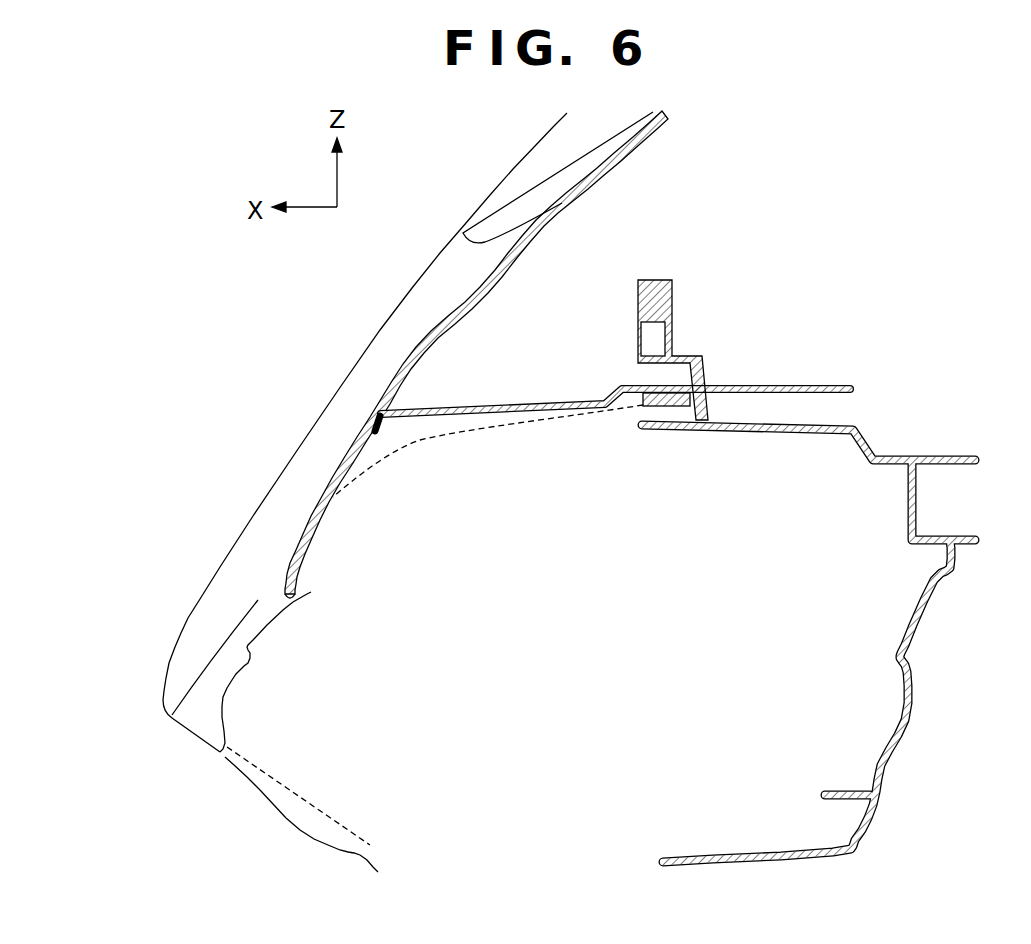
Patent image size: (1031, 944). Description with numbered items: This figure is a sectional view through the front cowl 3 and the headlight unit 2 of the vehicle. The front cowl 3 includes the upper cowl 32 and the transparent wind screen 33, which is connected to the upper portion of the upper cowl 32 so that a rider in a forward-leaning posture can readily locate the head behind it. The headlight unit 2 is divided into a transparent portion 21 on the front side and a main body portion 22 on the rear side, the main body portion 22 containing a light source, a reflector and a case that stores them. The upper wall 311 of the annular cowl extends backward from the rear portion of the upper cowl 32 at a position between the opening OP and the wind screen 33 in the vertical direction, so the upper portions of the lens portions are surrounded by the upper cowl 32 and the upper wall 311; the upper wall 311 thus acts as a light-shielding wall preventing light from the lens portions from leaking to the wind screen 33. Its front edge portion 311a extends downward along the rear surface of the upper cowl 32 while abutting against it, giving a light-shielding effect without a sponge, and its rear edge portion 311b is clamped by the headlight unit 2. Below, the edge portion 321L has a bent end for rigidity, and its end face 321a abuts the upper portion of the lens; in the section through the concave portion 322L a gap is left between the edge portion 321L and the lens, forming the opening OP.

The headlight unit 2 is at (920, 366).
The front cowl 3 is at (252, 382).
The transparent portion 21 is at (468, 428).
The main body portion 22 is at (910, 670).
The upper cowl 32 is at (350, 370).
The wind screen 33 is at (512, 197).
The upper wall 311 is at (553, 403).
The front edge portion 311a is at (378, 427).
The rear edge portion 311b is at (678, 380).
The end face 321a is at (297, 597).
The edge portion 321L is at (205, 685).
The concave portion 322L is at (237, 677).
The opening OP is at (250, 702).